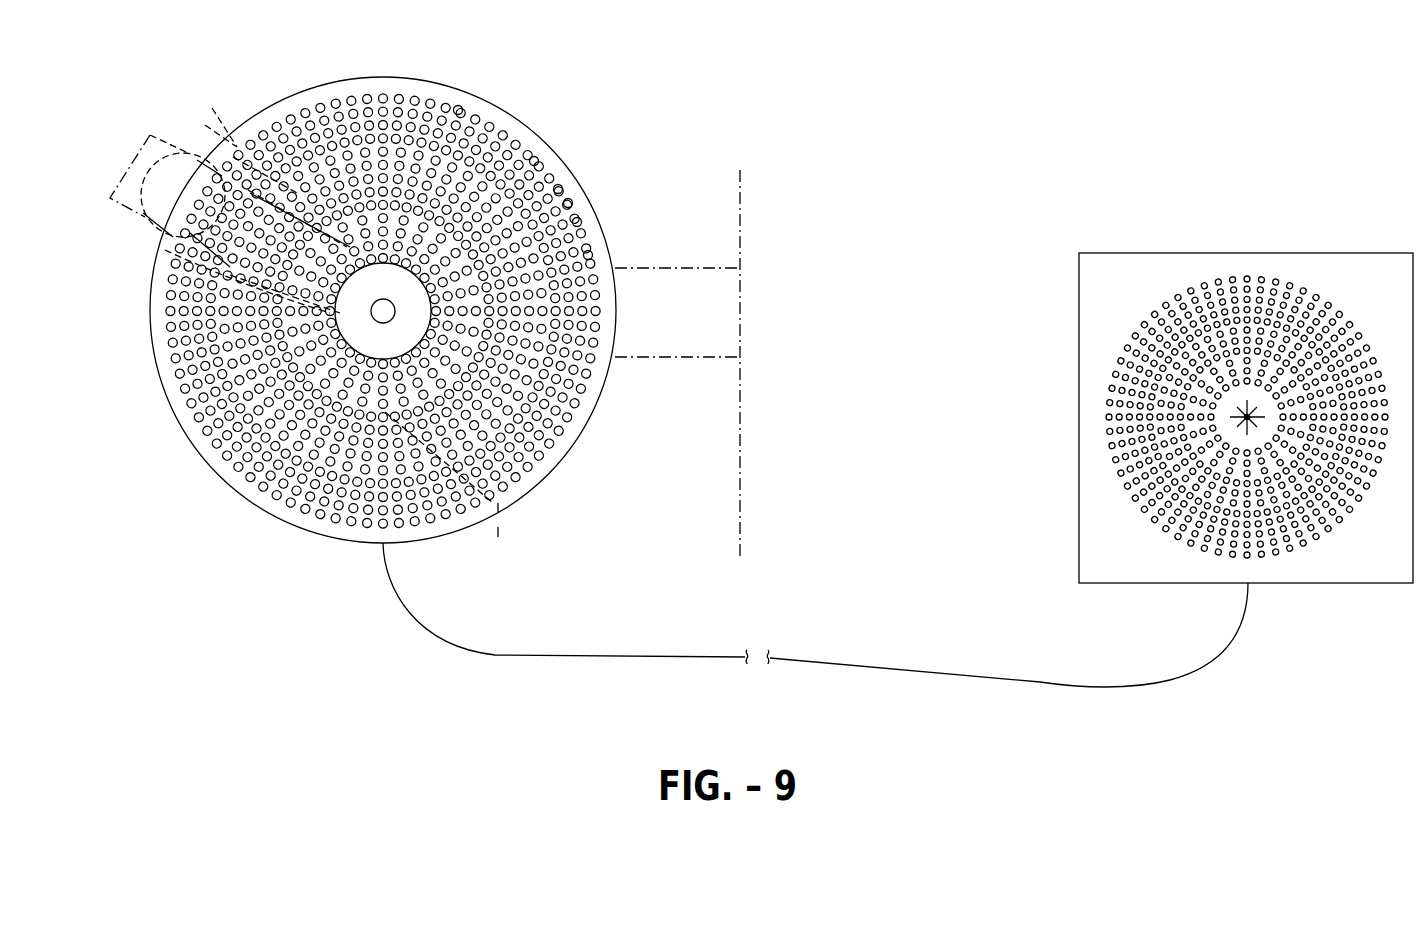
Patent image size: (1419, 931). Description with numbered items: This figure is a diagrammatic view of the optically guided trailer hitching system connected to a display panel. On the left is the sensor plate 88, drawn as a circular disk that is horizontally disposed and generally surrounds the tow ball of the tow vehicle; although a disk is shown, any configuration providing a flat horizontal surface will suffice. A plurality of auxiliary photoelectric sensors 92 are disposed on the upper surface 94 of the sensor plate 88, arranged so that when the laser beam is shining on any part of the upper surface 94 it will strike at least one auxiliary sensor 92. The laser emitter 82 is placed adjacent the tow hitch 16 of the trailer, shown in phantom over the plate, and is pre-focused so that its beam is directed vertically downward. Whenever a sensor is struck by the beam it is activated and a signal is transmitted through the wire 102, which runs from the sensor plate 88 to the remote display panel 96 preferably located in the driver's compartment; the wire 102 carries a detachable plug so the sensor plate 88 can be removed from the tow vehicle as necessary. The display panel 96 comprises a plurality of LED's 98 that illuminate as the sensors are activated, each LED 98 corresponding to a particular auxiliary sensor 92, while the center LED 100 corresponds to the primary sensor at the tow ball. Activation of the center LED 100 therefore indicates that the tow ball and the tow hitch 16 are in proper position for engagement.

The tow hitch 16 is at (210, 107).
The laser emitter 82 is at (390, 319).
The sensor plate 88 is at (288, 537).
The auxiliary photoelectric sensors 92 is at (571, 201).
The upper surface 94 is at (460, 106).
The display panel 96 is at (1230, 253).
The LED's 98 is at (1197, 465).
The center LED 100 is at (1252, 416).
The wire 102 is at (615, 652).